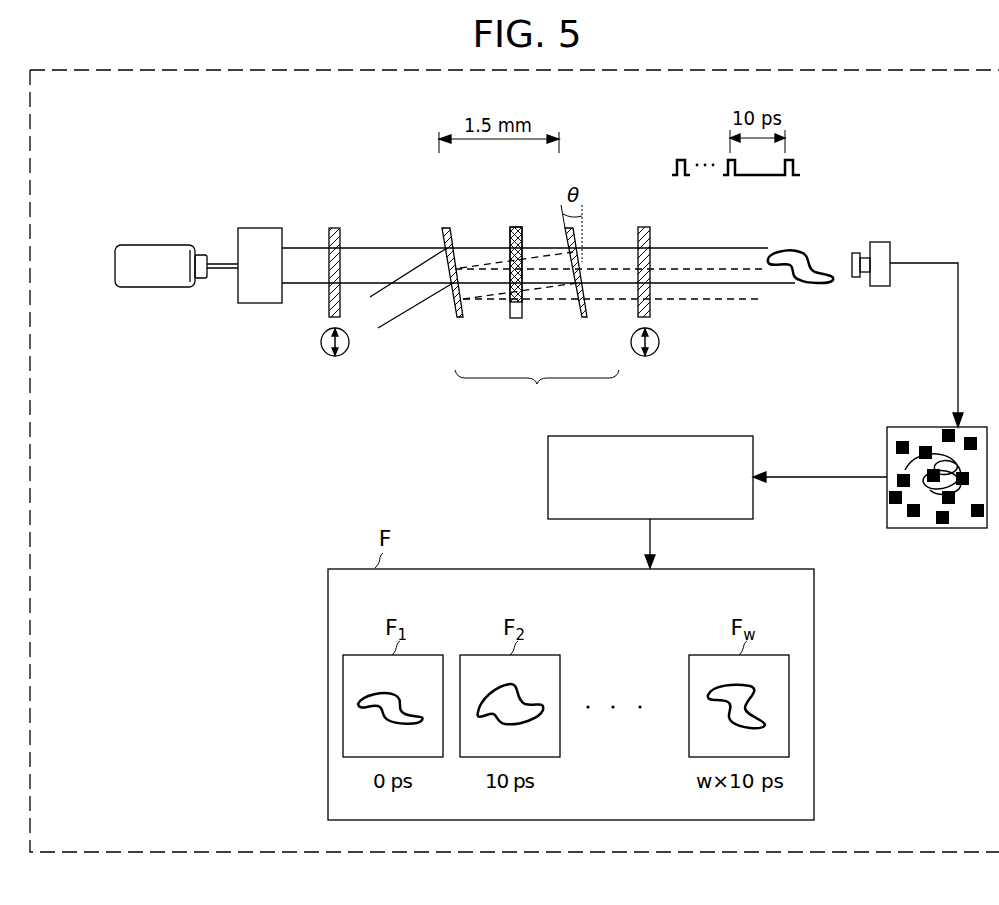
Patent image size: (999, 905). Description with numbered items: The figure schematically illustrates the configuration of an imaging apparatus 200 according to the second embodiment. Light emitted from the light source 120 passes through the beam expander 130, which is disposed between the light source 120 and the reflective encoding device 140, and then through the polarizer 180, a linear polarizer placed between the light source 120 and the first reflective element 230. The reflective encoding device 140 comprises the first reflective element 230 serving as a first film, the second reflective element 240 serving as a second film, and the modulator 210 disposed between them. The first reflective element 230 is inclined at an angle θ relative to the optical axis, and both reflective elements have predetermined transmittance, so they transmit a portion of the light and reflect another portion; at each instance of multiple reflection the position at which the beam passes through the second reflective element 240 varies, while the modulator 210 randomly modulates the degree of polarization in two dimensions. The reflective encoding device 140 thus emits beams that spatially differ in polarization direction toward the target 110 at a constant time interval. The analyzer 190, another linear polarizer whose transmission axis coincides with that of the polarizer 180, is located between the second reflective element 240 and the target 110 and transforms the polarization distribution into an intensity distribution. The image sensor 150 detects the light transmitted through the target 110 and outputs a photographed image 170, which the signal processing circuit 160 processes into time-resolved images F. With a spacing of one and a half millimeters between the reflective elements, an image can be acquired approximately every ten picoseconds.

The imaging apparatus 200 is at (838, 142).
The light source 120 is at (155, 288).
The beam expander 130 is at (267, 304).
The polarizer 180 is at (341, 304).
The first reflective element 230 is at (462, 318).
The modulator 210 is at (516, 319).
The second reflective element 240 is at (585, 318).
The reflective encoding device 140 is at (537, 390).
The analyzer 190 is at (651, 306).
The target 110 is at (803, 284).
The image sensor 150 is at (880, 287).
The photographed image 170 is at (940, 529).
The signal processing circuit 160 is at (547, 477).